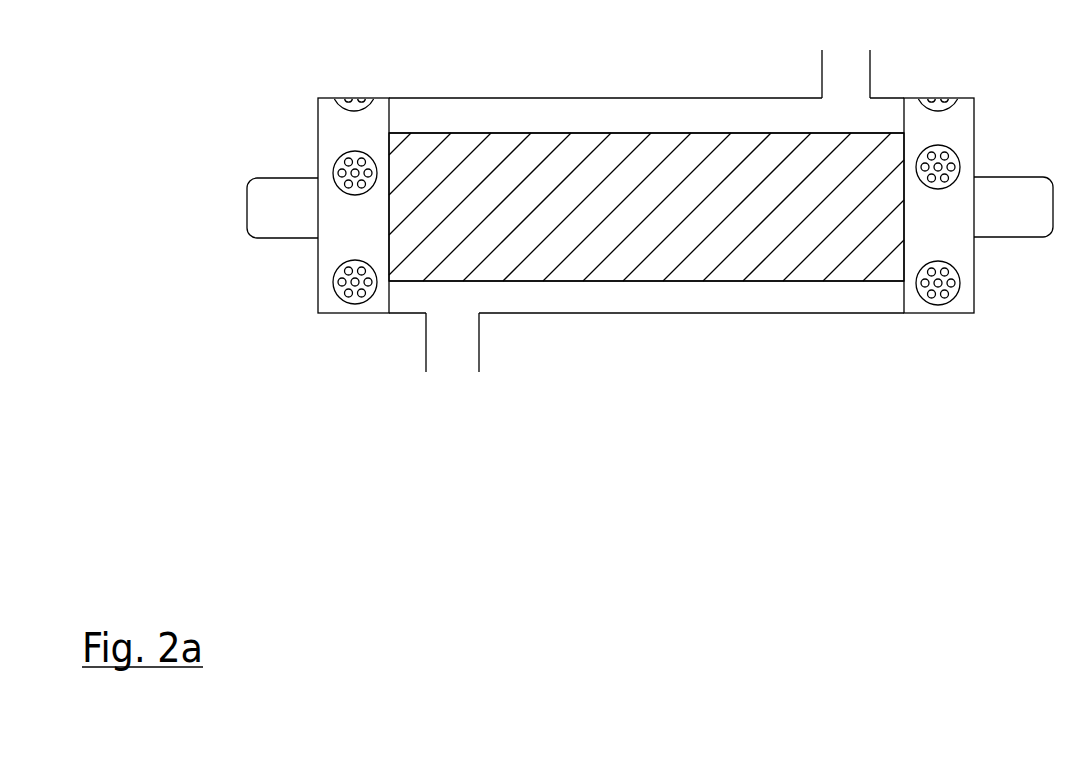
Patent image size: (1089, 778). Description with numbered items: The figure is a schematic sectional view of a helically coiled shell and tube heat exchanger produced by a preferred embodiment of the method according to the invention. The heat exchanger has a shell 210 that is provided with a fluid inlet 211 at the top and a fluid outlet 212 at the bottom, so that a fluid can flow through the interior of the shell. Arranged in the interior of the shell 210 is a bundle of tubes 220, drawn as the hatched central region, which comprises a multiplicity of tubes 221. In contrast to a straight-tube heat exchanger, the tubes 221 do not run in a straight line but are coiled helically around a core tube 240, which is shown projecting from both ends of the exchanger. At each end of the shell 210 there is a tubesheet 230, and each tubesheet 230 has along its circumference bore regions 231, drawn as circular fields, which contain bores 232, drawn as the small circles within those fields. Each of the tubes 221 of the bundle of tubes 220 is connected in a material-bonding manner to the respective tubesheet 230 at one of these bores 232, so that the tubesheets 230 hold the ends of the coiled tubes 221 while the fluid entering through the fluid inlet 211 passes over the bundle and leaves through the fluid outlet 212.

The shell 210 is at (422, 97).
The fluid inlet 211 is at (857, 67).
The fluid outlet 212 is at (452, 350).
The bundle of tubes 220 is at (622, 130).
The tube 221 is at (547, 178).
The tubesheet 230 is at (337, 307).
The bore region 231 is at (354, 196).
The bore 232 is at (348, 108).
The core tube 240 is at (283, 220).